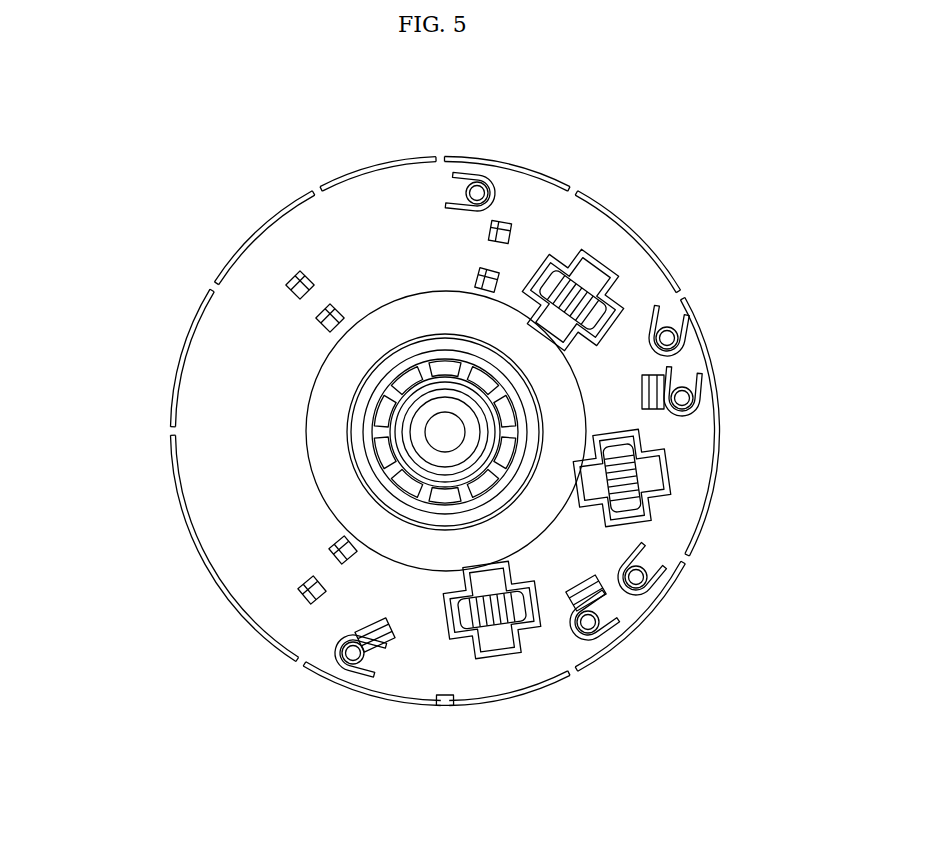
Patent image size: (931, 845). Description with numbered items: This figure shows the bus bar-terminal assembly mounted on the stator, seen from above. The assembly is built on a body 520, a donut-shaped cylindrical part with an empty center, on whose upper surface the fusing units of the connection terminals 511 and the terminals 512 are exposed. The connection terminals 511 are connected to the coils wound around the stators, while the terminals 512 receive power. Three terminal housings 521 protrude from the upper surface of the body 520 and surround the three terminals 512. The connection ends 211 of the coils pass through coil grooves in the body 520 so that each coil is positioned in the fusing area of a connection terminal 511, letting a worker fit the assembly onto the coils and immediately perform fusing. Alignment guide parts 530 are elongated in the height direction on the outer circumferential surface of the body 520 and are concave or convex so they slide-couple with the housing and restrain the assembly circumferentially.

The connection end 211 is at (478, 190).
The connection terminal 511 is at (500, 190).
The terminal 512 is at (605, 300).
The body 520 is at (235, 508).
The terminal housing 521 is at (578, 280).
The alignment guide part 530 is at (172, 432).